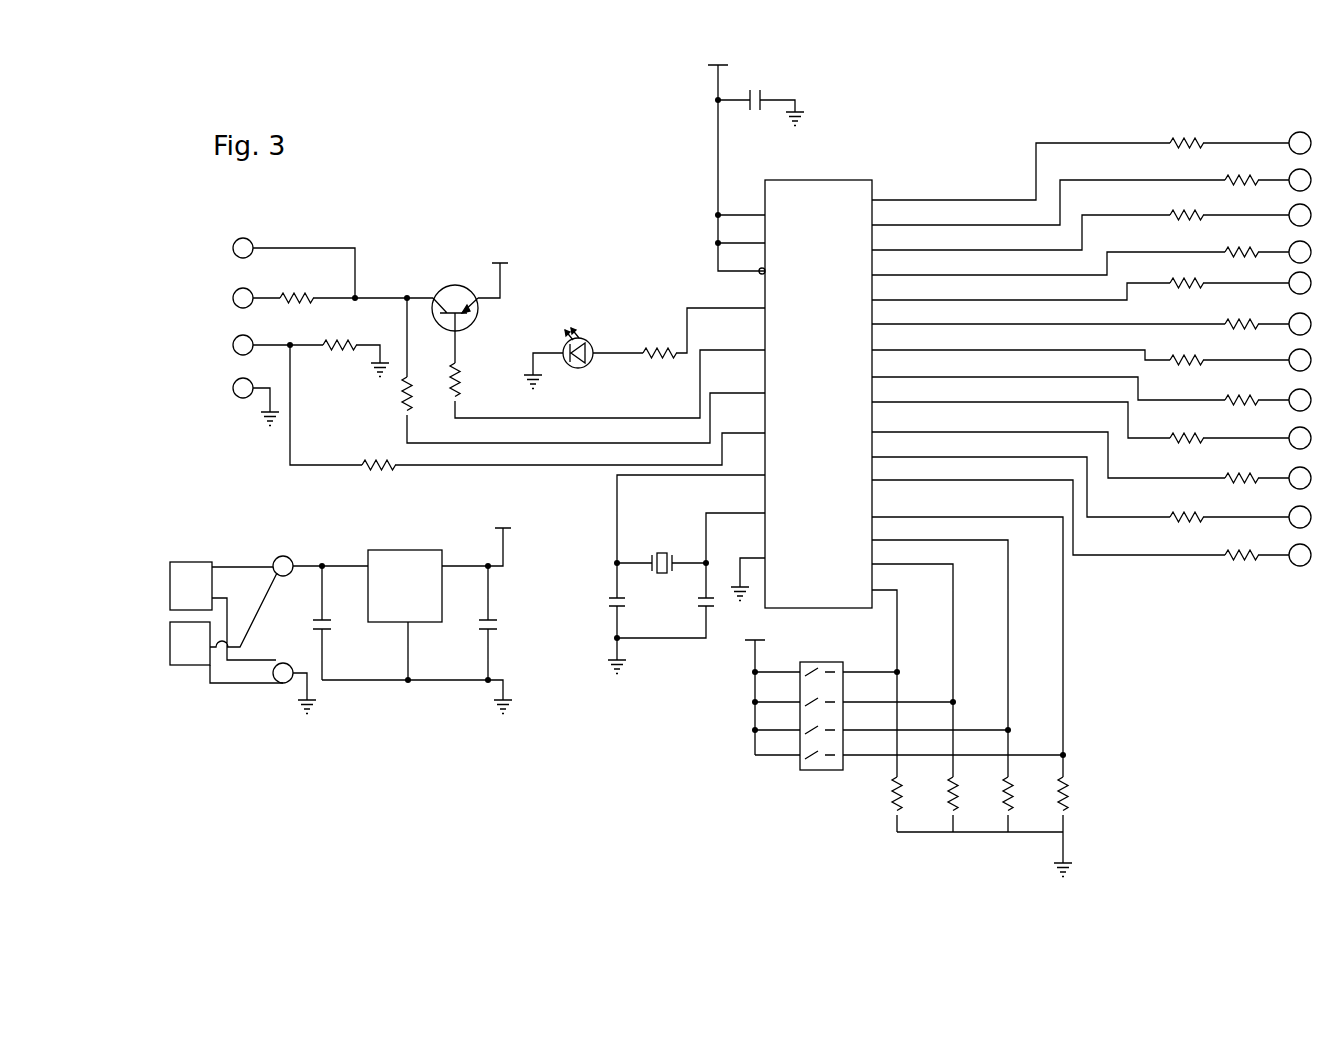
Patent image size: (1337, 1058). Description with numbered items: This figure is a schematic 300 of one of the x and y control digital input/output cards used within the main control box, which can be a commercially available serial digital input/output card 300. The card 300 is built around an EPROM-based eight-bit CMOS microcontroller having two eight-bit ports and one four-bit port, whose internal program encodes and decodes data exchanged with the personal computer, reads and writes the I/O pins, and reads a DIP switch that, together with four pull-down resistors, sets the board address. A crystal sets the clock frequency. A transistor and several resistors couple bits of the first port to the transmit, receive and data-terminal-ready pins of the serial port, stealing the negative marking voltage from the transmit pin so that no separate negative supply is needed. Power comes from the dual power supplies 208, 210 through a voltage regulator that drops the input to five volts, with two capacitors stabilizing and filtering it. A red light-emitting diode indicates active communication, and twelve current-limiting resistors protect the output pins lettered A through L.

The RS-232 digital input/output card 300 is at (537, 177).
The +12/−12 VAC dual power supply 208 is at (205, 600).
The +5/−5 VAC dual power supply 210 is at (204, 659).